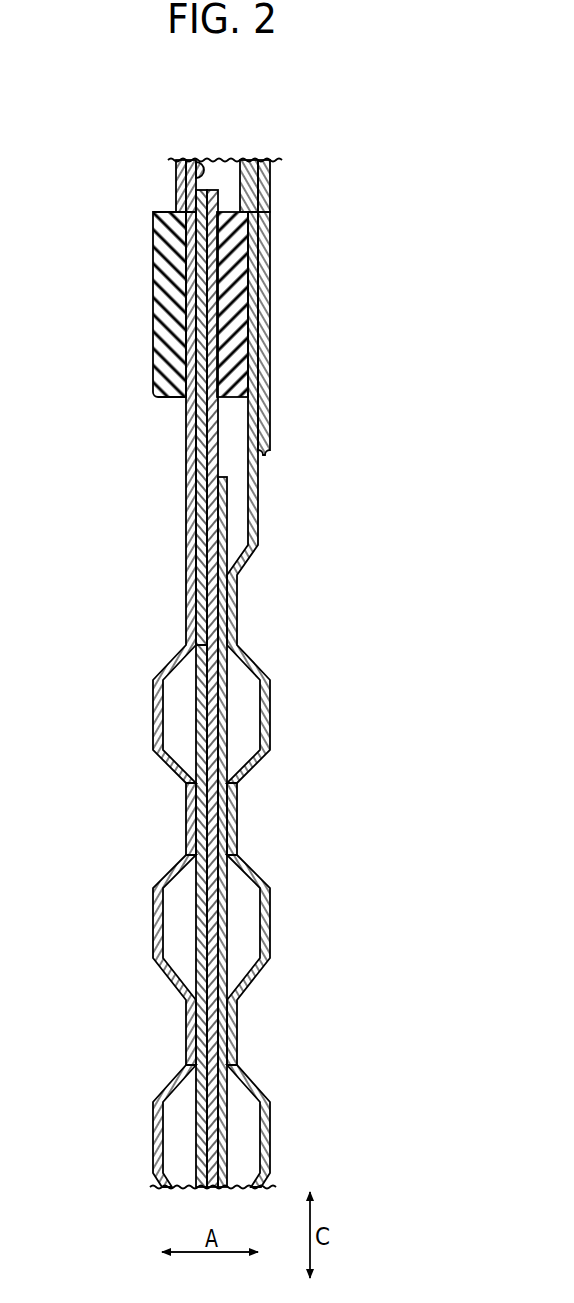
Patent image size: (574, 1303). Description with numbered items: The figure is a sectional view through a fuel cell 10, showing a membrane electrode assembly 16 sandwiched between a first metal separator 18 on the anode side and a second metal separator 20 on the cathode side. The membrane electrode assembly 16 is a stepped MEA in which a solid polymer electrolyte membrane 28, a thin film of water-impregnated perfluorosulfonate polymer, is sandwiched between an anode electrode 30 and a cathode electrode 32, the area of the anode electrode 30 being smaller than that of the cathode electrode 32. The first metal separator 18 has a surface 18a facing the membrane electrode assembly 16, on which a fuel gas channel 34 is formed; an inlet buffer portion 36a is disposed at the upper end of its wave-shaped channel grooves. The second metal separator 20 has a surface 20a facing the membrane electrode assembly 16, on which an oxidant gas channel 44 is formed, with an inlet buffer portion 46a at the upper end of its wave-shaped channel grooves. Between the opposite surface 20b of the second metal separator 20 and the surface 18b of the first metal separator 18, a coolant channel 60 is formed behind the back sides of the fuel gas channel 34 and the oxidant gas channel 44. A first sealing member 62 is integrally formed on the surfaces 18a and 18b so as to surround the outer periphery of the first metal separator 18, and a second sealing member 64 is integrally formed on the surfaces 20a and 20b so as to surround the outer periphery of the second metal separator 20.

The fuel cell 10 is at (314, 77).
The membrane electrode assembly 16 is at (137, 688).
The first metal separator 18 is at (258, 157).
The surface of the first metal separator 18a is at (248, 498).
The surface of the first metal separator 18b is at (260, 525).
The second metal separator 20 is at (191, 157).
The surface of the second metal separator 20a is at (197, 458).
The surface of the second metal separator 20b is at (187, 438).
The solid polymer electrolyte membrane 28 is at (210, 968).
The anode electrode 30 is at (222, 1020).
The cathode electrode 32 is at (195, 940).
The fuel gas channel 34 is at (247, 1137).
The inlet buffer portion 36a is at (239, 822).
The oxidant gas channel 44 is at (175, 1137).
The inlet buffer portion 46a is at (184, 822).
The coolant channel 60 is at (252, 1018).
The first sealing member 62 is at (237, 252).
The second sealing member 64 is at (170, 254).